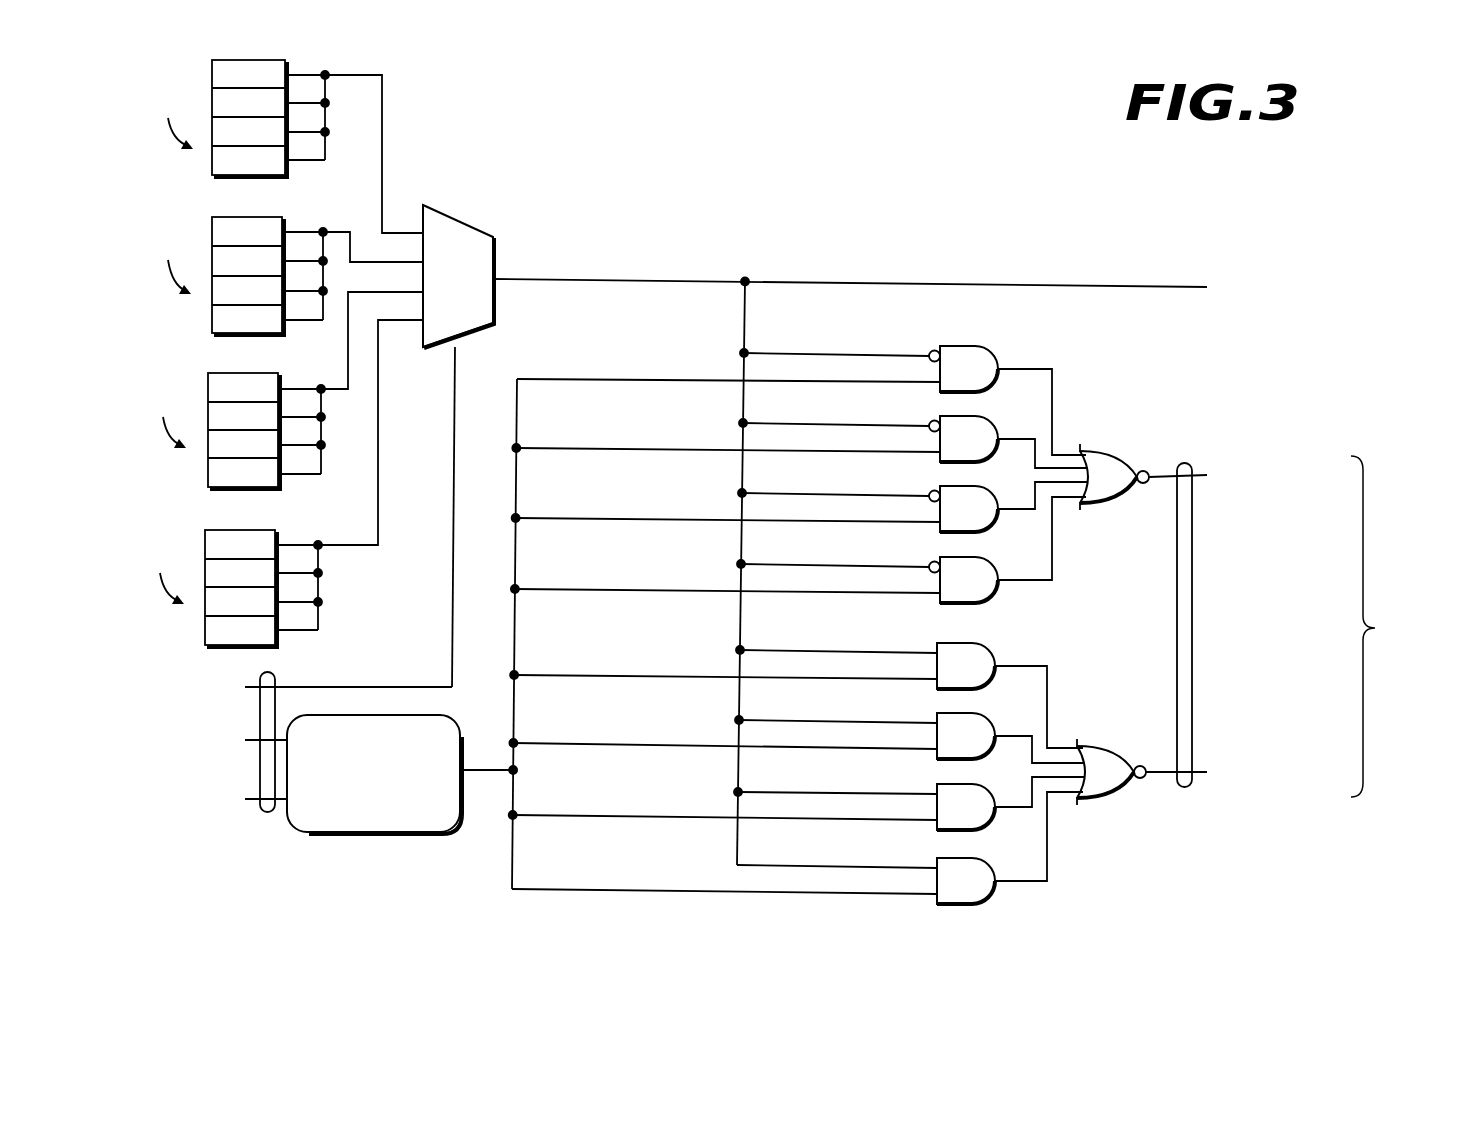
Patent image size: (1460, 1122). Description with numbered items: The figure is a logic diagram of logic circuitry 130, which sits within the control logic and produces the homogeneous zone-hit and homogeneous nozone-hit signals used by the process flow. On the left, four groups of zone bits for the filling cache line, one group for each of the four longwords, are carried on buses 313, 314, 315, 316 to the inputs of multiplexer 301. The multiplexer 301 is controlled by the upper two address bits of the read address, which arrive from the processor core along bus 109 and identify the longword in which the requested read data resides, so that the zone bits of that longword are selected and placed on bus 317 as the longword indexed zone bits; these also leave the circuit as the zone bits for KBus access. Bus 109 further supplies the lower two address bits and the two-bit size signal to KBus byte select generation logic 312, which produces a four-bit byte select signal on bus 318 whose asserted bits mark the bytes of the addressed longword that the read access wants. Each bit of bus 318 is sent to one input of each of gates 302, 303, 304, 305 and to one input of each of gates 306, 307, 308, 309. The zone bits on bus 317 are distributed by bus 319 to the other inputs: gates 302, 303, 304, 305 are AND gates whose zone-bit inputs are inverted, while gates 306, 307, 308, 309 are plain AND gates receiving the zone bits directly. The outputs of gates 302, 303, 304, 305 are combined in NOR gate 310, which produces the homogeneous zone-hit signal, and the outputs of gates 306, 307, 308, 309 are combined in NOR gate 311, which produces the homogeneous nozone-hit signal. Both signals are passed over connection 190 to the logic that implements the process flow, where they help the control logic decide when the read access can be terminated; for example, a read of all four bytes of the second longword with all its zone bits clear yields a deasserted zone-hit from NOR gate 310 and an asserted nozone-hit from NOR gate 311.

The logic circuitry 130 is at (884, 159).
The bus 109 is at (266, 673).
The connection 190 is at (1184, 462).
The multiplexer 301 is at (451, 216).
The AND gate with inverted input 302 is at (949, 381).
The AND gate with inverted input 303 is at (949, 451).
The AND gate with inverted input 304 is at (949, 521).
The AND gate with inverted input 305 is at (949, 592).
The AND gate 306 is at (946, 678).
The AND gate 307 is at (946, 748).
The AND gate 308 is at (946, 819).
The AND gate 309 is at (946, 893).
The NOR gate 310 is at (1106, 503).
The NOR gate 311 is at (1104, 798).
The KBus byte select generation logic 312 is at (371, 834).
The bus 313 is at (382, 131).
The bus 314 is at (347, 232).
The bus 315 is at (348, 367).
The bus 316 is at (378, 523).
The bus 317 is at (577, 279).
The bus 318 is at (488, 770).
The bus 319 is at (743, 313).